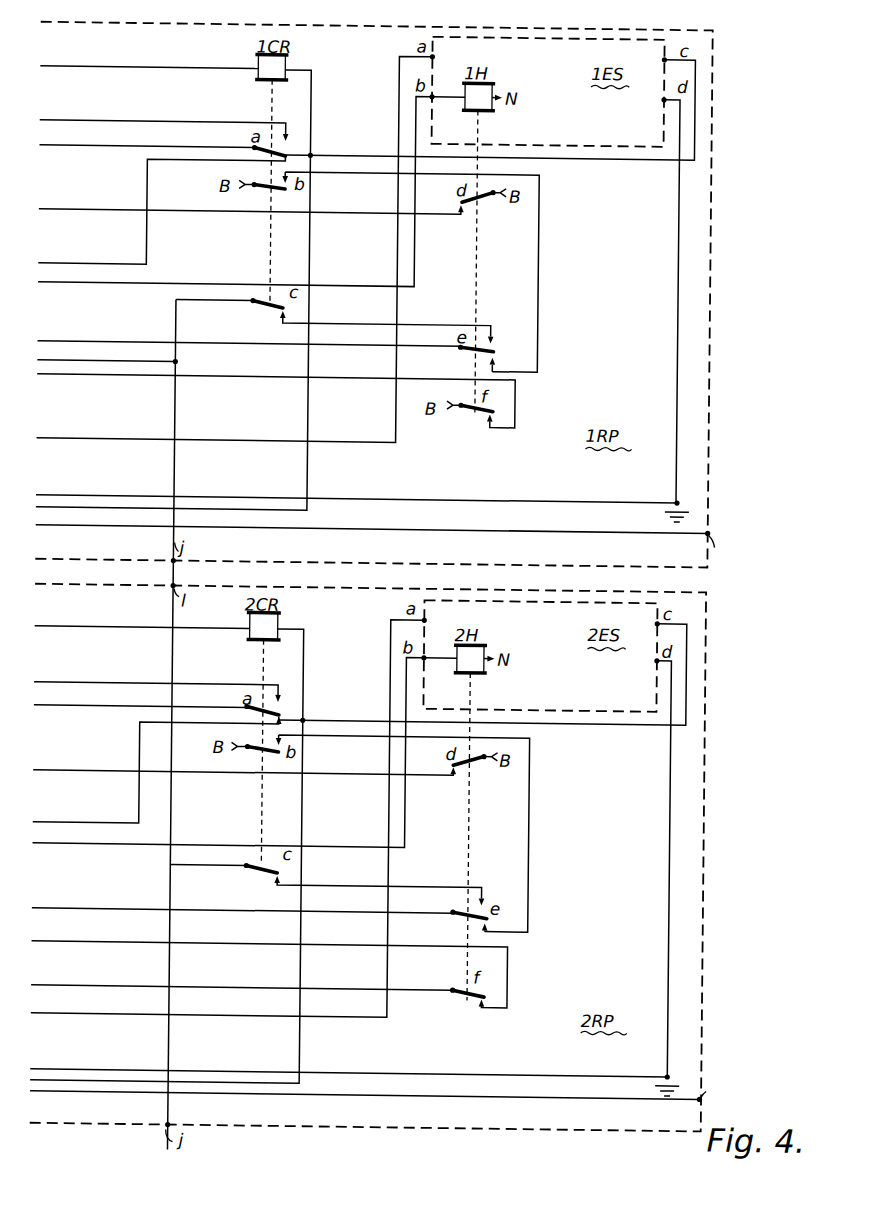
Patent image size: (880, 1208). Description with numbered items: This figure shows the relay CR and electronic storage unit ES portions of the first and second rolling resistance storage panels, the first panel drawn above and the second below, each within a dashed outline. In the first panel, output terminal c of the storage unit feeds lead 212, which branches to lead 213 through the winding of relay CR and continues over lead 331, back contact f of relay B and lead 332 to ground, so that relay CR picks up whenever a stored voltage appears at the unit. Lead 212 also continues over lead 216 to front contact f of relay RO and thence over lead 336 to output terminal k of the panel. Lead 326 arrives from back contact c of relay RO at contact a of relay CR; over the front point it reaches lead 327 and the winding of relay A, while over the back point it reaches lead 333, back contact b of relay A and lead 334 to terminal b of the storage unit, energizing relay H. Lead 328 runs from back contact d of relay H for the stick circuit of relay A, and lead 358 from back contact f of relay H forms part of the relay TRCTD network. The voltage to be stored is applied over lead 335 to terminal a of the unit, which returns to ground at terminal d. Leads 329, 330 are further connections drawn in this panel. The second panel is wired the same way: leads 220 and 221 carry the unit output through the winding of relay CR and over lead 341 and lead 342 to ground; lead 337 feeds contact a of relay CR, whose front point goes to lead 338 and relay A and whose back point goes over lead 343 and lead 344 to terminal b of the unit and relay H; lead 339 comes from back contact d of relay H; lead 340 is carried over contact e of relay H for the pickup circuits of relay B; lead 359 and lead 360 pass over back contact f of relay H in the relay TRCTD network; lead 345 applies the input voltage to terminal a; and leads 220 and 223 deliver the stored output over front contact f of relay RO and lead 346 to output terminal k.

The lead 331 is at (76, 69).
The lead 213 is at (307, 98).
The lead 327 is at (76, 123).
The lead 326 is at (76, 148).
The lead 212 is at (571, 158).
The lead 333 is at (76, 266).
The lead 216 is at (307, 190).
The lead 328 is at (76, 212).
The lead 334 is at (76, 285).
The wire to contact e of relay 1H 330 is at (76, 344).
The wire to bus j 329 is at (76, 363).
The lead 358 is at (78, 383).
The lead 335 is at (76, 441).
The lead 332 is at (76, 498).
The lead 336 is at (78, 531).
The lead 341 is at (76, 629).
The lead 221 is at (305, 663).
The lead 338 is at (76, 685).
The lead 337 is at (76, 708).
The lead 220 is at (574, 725).
The lead 343 is at (76, 825).
The lead 223 is at (305, 762).
The lead 339 is at (76, 773).
The lead 344 is at (76, 846).
The lead 340 is at (76, 911).
The lead 359 is at (76, 944).
The lead 360 is at (76, 988).
The lead 345 is at (76, 1016).
The lead 342 is at (76, 1072).
The lead 346 is at (78, 1100).